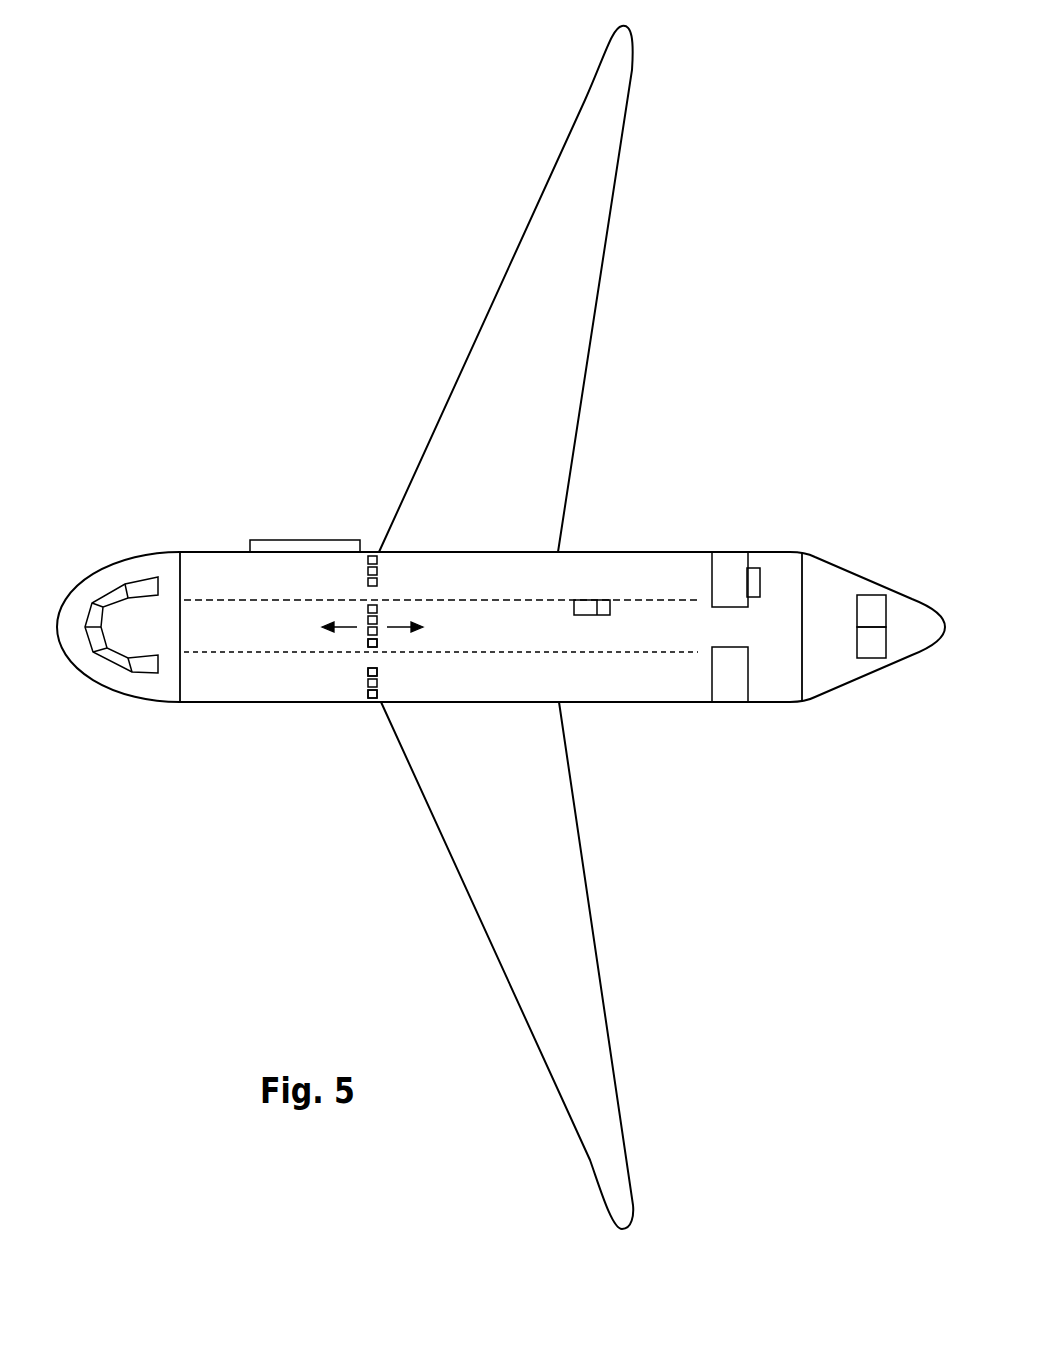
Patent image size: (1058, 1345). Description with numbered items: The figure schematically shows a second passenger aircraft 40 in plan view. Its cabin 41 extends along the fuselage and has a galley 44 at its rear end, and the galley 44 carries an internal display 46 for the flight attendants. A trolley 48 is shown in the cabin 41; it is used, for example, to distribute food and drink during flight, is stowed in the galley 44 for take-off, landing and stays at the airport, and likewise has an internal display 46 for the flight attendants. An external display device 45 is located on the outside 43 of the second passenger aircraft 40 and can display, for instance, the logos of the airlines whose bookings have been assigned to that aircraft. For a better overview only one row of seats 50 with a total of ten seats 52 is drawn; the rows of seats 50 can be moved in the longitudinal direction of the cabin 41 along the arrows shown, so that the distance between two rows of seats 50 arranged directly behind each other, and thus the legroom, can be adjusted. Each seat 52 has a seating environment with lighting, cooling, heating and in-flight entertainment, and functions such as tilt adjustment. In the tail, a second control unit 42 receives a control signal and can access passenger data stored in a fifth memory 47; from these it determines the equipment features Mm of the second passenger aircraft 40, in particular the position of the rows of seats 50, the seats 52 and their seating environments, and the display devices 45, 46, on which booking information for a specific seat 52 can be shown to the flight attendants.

The second passenger aircraft 40 is at (371, 410).
The cabin 41 is at (220, 702).
The second control unit 42 is at (870, 595).
The outside 43 is at (207, 552).
The galley 44 is at (793, 674).
The external display device 45 is at (288, 539).
The internal display 46 is at (620, 725).
The fifth memory 47 is at (870, 658).
The trolley 48 is at (585, 600).
The row of seats 50 is at (353, 813).
The seat 52 is at (367, 643).